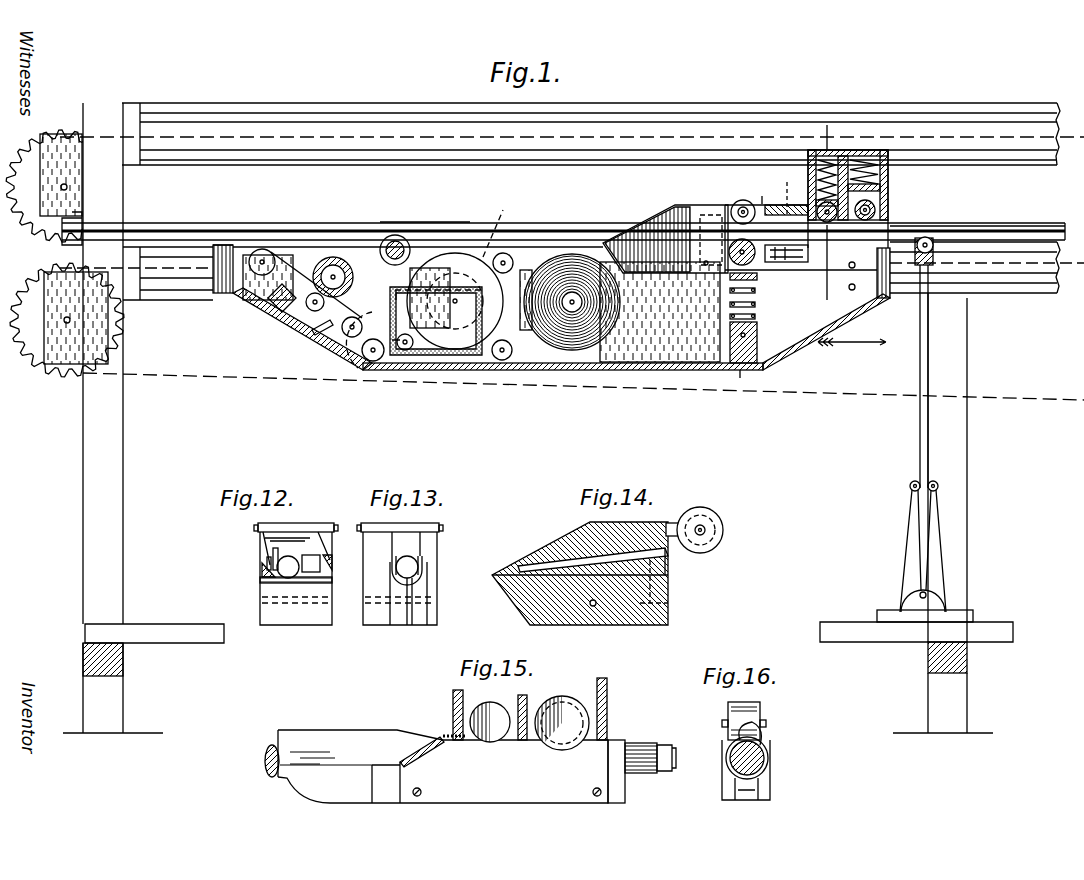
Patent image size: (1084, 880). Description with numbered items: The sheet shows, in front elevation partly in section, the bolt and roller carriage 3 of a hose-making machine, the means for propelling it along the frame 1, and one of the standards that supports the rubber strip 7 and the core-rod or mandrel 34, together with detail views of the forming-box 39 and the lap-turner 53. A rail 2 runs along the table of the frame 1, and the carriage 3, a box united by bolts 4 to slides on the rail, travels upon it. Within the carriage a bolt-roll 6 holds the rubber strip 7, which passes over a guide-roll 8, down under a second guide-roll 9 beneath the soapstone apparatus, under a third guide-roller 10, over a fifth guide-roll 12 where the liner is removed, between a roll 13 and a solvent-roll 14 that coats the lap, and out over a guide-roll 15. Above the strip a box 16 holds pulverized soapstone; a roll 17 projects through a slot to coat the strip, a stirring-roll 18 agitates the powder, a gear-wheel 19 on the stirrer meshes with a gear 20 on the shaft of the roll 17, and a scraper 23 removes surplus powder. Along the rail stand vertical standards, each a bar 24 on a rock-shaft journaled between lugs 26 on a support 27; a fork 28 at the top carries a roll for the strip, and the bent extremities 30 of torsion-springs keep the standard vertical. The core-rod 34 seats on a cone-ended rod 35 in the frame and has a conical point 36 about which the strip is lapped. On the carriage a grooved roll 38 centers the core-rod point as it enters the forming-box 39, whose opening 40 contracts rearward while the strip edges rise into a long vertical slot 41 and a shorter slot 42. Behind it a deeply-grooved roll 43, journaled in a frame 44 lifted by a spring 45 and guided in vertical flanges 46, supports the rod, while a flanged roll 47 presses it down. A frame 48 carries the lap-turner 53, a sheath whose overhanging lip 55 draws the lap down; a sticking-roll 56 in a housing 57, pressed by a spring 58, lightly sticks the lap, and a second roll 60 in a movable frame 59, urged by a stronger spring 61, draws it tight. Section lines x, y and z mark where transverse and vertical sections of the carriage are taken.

In FIG. 1, the frame 1 is at (967, 358).
In FIG. 1, the rail 2 is at (1012, 295).
In FIG. 1, the bolt and roller carriage 3 is at (790, 345).
In FIG. 1, the bolts 4 is at (860, 287).
In FIG. 1, the bolt-roll 6 is at (582, 300).
In FIG. 1, the rubber strip 7 is at (537, 232).
In FIG. 15, the rubber strip 7 is at (336, 740).
In FIG. 16, the rubber strip 7 is at (728, 756).
In FIG. 1, the guide-roll 8 is at (509, 263).
In FIG. 1, the second guide-roll 9 is at (505, 360).
In FIG. 1, the third guide-roller 10 is at (366, 360).
In FIG. 1, the fifth guide-roll 12 is at (348, 336).
In FIG. 1, the roll 13 is at (310, 310).
In FIG. 1, the solvent-roll 14 is at (335, 258).
In FIG. 1, the guide-roll 15 is at (266, 250).
In FIG. 1, the box or casing 16 is at (446, 360).
In FIG. 1, the roll 17 is at (449, 301).
In FIG. 1, the stirring-roll 18 is at (405, 352).
In FIG. 1, the gear-wheel 19 is at (392, 392).
In FIG. 1, the gear 20 is at (502, 224).
In FIG. 1, the scraper 23 is at (392, 286).
In FIG. 1, the bar 24 is at (918, 461).
In FIG. 1, the lugs 26 is at (900, 598).
In FIG. 1, the support 27 is at (886, 642).
In FIG. 1, the fork 28 is at (935, 240).
In FIG. 1, the bent extremities of torsion-springs 30 is at (940, 486).
In FIG. 1, the core-rod or mandrel 34 is at (1005, 224).
In FIG. 15, the core-rod or mandrel 34 is at (263, 761).
In FIG. 1, the rod 35 is at (463, 228).
In FIG. 1, the conical point 36 is at (788, 202).
In FIG. 1, the grooved roll 38 is at (400, 240).
In FIG. 16, the grooved roll 38 is at (769, 757).
In FIG. 1, the forming-box 39 is at (640, 222).
In FIG. 12, the forming-box 39 is at (284, 574).
In FIG. 13, the forming-box 39 is at (437, 590).
In FIG. 14, the forming-box 39 is at (614, 637).
In FIG. 12, the opening 40 is at (288, 567).
In FIG. 13, the opening 40 is at (407, 567).
In FIG. 14, the opening 40 is at (593, 562).
In FIG. 12, the long vertical slot 41 is at (272, 555).
In FIG. 13, the long vertical slot 41 is at (422, 556).
In FIG. 12, the shorter slot 42 is at (300, 563).
In FIG. 13, the shorter slot 42 is at (392, 556).
In FIG. 1, the deeply-grooved roll 43 is at (750, 262).
In FIG. 1, the frame 44 is at (728, 302).
In FIG. 1, the spring 45 is at (728, 312).
In FIG. 13, the vertical flanges 46 is at (428, 612).
In FIG. 14, the vertical flanges 46 is at (676, 606).
In FIG. 1, the flanged roll 47 is at (743, 200).
In FIG. 14, the flanged roll 47 is at (712, 530).
In FIG. 1, the frame 48 is at (800, 262).
In FIG. 15, the lap-turner 53 is at (443, 771).
In FIG. 15, the overhanging lip 55 is at (443, 736).
In FIG. 16, the overhanging lip 55 is at (752, 738).
In FIG. 15, the sticking-roll 56 is at (494, 709).
In FIG. 16, the sticking-roll 56 is at (728, 708).
In FIG. 1, the frame or housing 57 is at (832, 160).
In FIG. 15, the frame or housing 57 is at (470, 714).
In FIG. 1, the spring 58 is at (860, 150).
In FIG. 16, the spring 58 is at (761, 770).
In FIG. 1, the movable frame 59 is at (880, 188).
In FIG. 15, the movable frame 59 is at (607, 705).
In FIG. 1, the second roll 60 is at (888, 209).
In FIG. 15, the second roll 60 is at (568, 706).
In FIG. 1, the spring 61 is at (888, 172).
In FIG. 1, the section line x x is at (750, 284).
In FIG. 1, the section line y y is at (786, 190).
In FIG. 1, the section line z z is at (825, 204).